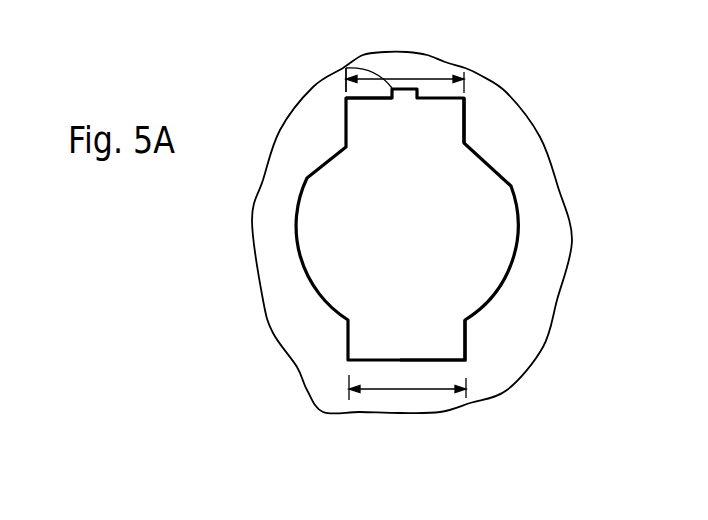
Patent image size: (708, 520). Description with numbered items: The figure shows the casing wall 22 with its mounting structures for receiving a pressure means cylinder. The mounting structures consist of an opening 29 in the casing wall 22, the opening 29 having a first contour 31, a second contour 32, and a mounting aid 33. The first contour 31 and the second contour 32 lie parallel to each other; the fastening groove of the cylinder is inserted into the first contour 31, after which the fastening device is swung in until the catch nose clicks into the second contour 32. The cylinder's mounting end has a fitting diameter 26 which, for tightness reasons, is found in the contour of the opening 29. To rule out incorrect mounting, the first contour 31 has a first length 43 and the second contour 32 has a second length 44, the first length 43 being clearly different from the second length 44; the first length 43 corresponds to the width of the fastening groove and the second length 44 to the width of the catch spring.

The casing wall 22 is at (533, 319).
The fitting diameter 26 is at (505, 177).
The opening 29 is at (415, 224).
The first contour 31 is at (451, 360).
The second contour 32 is at (450, 98).
The mounting aid 33 is at (343, 68).
The first length 43 is at (402, 389).
The second length 44 is at (410, 79).